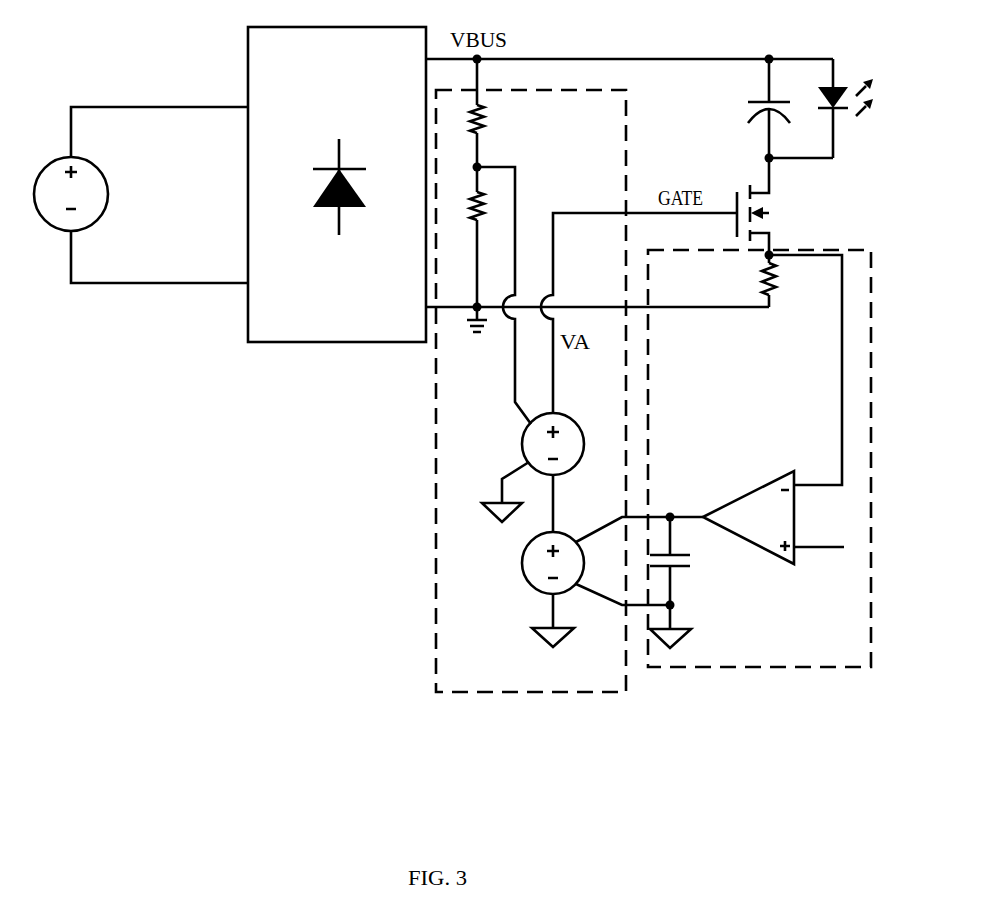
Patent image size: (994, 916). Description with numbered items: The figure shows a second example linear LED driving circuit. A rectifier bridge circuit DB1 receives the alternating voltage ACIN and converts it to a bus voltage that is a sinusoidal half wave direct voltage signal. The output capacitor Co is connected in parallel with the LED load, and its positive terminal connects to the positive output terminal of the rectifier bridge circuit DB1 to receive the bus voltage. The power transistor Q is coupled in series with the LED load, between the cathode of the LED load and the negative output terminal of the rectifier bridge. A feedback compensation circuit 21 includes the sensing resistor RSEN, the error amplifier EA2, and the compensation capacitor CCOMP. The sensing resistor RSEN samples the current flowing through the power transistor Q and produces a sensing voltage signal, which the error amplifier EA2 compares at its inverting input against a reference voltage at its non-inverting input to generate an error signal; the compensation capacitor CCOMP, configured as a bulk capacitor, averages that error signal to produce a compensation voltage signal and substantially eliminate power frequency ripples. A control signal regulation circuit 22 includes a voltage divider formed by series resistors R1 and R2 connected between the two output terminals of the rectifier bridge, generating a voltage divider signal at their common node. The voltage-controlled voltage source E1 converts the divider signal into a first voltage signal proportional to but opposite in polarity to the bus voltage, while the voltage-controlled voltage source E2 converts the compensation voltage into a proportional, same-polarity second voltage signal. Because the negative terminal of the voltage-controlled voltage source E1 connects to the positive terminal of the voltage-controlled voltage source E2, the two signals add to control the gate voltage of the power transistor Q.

The feedback compensation circuit 21 is at (759, 458).
The control signal regulation circuit 22 is at (553, 375).
The alternating voltage ACIN is at (99, 194).
The rectifier bridge circuit DB1 is at (337, 201).
The output capacitor Co is at (751, 108).
The power transistor Q is at (765, 206).
The resistor R1 is at (462, 113).
The resistor R2 is at (462, 237).
The voltage-controlled voltage source E1 is at (533, 467).
The voltage-controlled voltage source E2 is at (536, 589).
The sensing resistor RSEN is at (799, 281).
The error amplifier EA2 is at (748, 517).
The compensation capacitor CCOMP is at (699, 582).